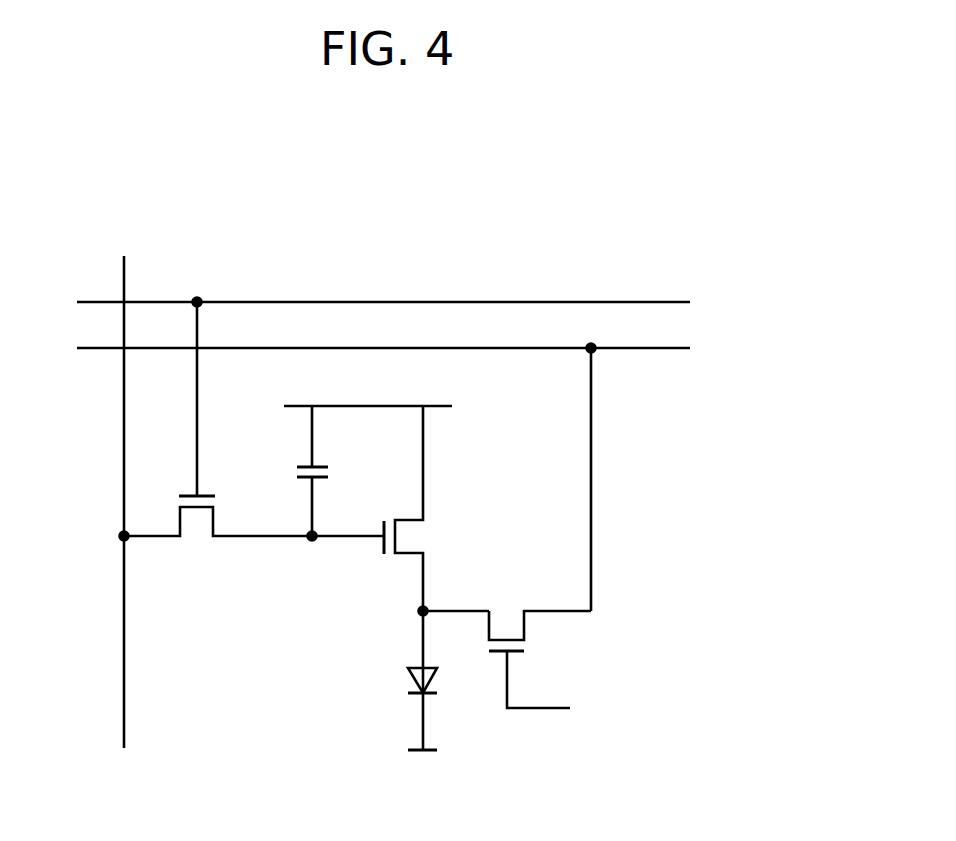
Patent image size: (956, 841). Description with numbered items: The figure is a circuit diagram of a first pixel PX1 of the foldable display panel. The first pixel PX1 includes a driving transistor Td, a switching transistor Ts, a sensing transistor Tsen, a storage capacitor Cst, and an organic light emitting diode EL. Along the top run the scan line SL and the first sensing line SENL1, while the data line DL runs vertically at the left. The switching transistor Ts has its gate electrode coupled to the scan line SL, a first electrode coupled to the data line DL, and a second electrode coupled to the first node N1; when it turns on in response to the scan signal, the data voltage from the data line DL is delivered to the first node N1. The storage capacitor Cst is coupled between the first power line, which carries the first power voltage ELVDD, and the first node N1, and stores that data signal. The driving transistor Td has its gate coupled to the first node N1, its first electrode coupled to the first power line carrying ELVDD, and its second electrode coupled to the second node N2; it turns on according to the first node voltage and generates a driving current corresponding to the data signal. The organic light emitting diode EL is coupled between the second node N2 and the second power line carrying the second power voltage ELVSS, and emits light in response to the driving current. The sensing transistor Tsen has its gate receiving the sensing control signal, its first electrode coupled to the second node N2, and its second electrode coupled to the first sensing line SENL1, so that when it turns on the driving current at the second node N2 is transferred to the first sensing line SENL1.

The first pixel PX1 is at (610, 214).
The data line DL is at (124, 615).
The scan line SL is at (655, 302).
The first sensing line SENL1 is at (655, 352).
The switching transistor Ts is at (216, 435).
The first node N1 is at (342, 550).
The first power voltage ELVDD is at (368, 392).
The storage capacitor Cst is at (333, 471).
The driving transistor Td is at (417, 508).
The second node N2 is at (437, 615).
The sensing transistor Tsen is at (536, 644).
The organic light emitting diode EL is at (437, 680).
The second power voltage ELVSS is at (420, 766).